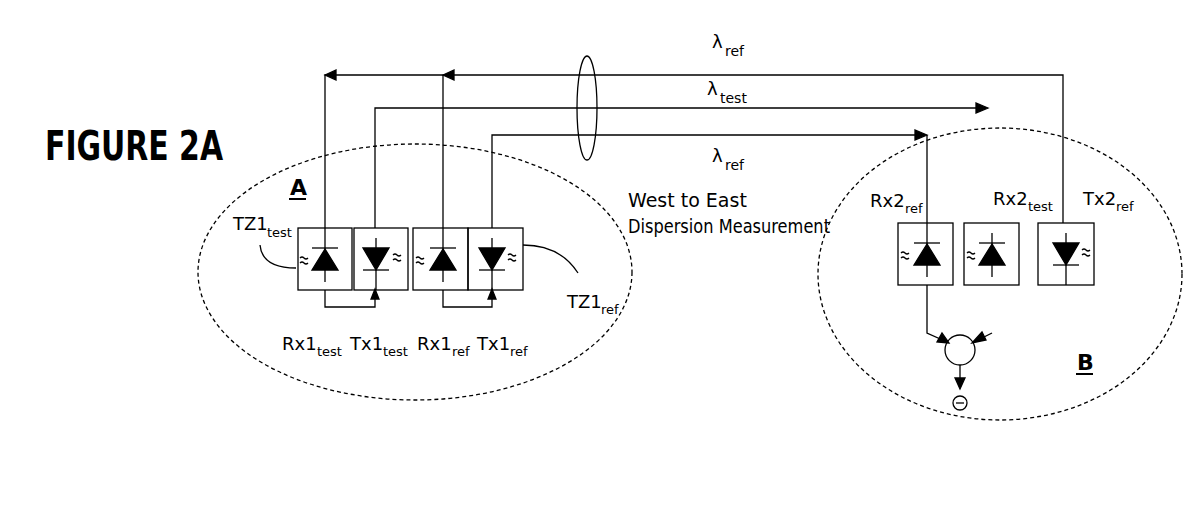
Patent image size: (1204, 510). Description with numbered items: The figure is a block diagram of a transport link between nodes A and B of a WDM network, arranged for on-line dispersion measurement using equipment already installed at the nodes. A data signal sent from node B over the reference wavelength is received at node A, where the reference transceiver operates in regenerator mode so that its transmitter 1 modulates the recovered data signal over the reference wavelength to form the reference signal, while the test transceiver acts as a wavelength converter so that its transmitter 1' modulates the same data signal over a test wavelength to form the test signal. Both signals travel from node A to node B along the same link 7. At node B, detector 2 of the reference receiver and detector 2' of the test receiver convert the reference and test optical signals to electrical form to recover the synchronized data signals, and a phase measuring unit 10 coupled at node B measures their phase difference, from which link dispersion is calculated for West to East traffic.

The optical link 7 is at (589, 68).
The transmitter 1 is at (503, 238).
The transmitter 1' is at (388, 234).
The detector 2 is at (908, 267).
The detector 2' is at (1011, 284).
The phase measuring unit 10 is at (945, 355).